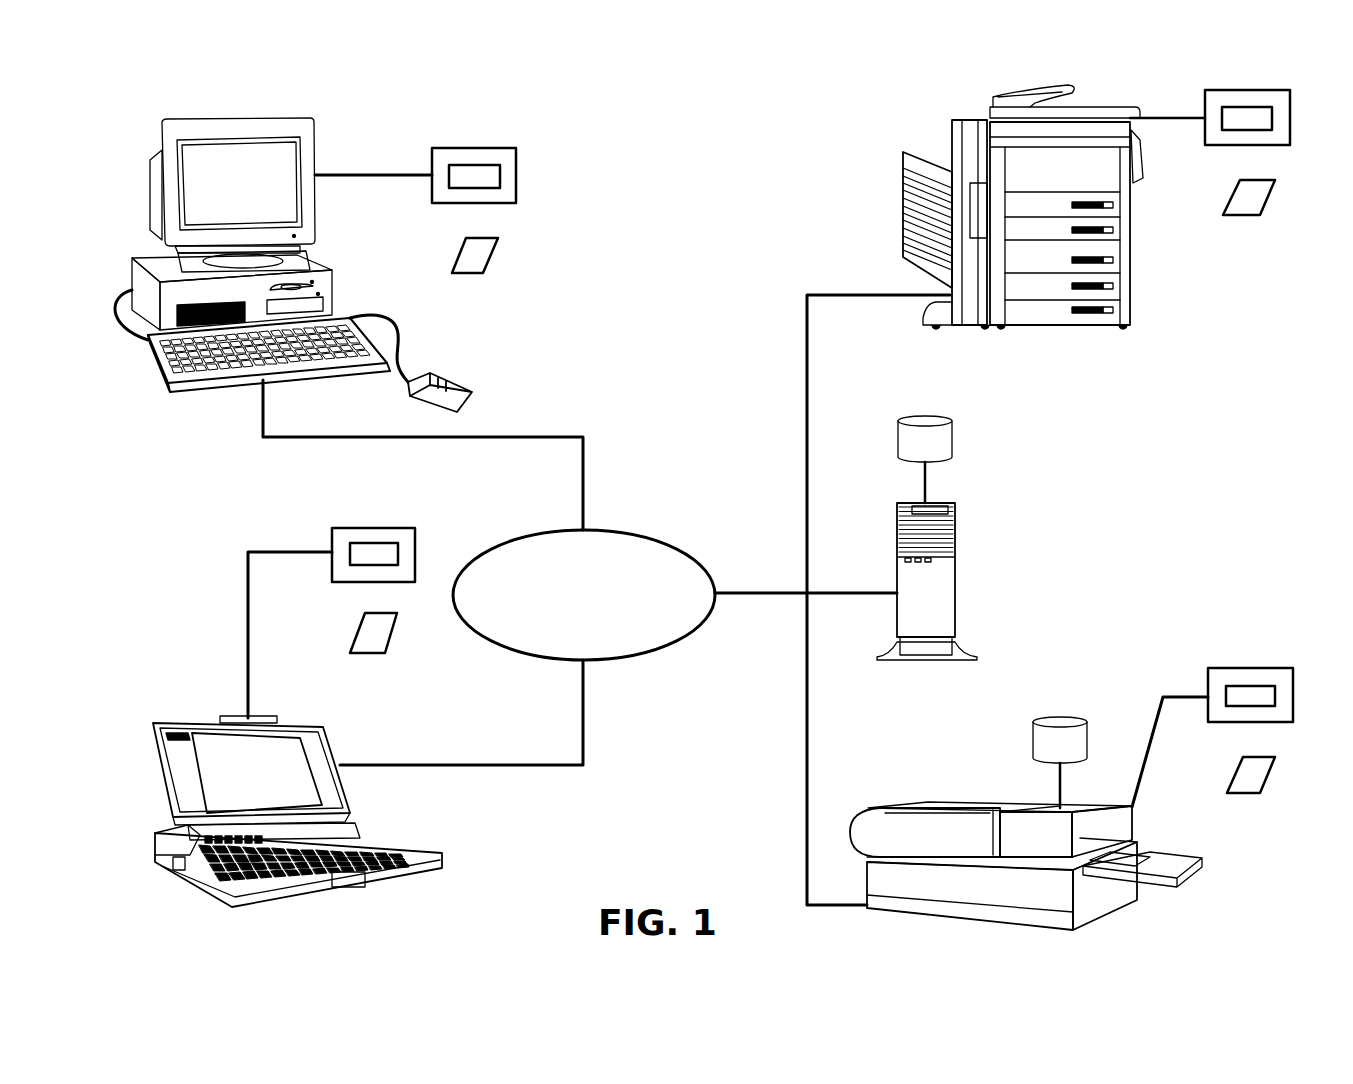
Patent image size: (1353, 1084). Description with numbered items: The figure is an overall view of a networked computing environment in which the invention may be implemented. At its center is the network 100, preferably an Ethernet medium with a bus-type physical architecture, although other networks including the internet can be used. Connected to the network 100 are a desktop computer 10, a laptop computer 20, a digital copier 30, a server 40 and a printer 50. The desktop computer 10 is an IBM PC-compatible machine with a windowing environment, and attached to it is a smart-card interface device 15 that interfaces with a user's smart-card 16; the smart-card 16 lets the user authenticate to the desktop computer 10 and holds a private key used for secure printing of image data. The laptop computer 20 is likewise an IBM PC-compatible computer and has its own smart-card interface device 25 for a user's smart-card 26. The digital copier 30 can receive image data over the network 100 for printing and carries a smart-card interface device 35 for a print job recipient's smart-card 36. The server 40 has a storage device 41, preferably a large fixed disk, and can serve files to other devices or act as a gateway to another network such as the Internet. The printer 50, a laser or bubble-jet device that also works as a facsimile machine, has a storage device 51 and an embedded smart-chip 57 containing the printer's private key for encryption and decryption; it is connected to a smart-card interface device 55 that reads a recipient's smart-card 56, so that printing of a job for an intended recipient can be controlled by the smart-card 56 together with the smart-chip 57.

The desktop computer 10 is at (175, 120).
The smart-card interface device 15 is at (460, 148).
The smart-card 16 is at (455, 258).
The laptop computer 20 is at (192, 720).
The smart-card interface device 25 is at (368, 528).
The smart-card 26 is at (392, 630).
The digital copier 30 is at (967, 120).
The smart-card interface device 35 is at (1205, 146).
The smart-card 36 is at (1248, 215).
The server 40 is at (955, 580).
The storage device 41 is at (952, 420).
The printer 50 is at (963, 802).
The storage device 51 is at (1072, 718).
The smart-card interface device 55 is at (1258, 668).
The smart-card 56 is at (1243, 793).
The smart-chip 57 is at (918, 890).
The network 100 is at (722, 518).